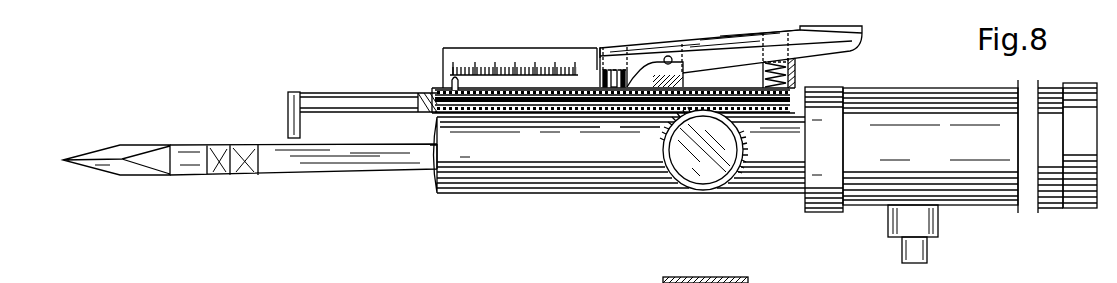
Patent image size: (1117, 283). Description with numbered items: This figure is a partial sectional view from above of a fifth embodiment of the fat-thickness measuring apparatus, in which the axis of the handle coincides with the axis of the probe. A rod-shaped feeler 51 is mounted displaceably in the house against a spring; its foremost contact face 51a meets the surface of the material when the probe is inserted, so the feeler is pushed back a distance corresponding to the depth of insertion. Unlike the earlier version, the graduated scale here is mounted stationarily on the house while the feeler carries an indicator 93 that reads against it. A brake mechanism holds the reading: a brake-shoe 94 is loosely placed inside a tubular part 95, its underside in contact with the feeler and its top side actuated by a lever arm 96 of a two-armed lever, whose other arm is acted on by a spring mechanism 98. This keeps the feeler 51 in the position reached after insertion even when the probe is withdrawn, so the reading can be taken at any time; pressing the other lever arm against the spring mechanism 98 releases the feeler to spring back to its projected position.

The rod-shaped feeler 51 is at (358, 93).
The contact face 51a is at (289, 104).
The indicator 93 is at (449, 85).
The brake-shoe 94 is at (617, 68).
The tubular part 95 is at (601, 68).
The lever arm 96 is at (643, 54).
The spring mechanism 98 is at (793, 72).